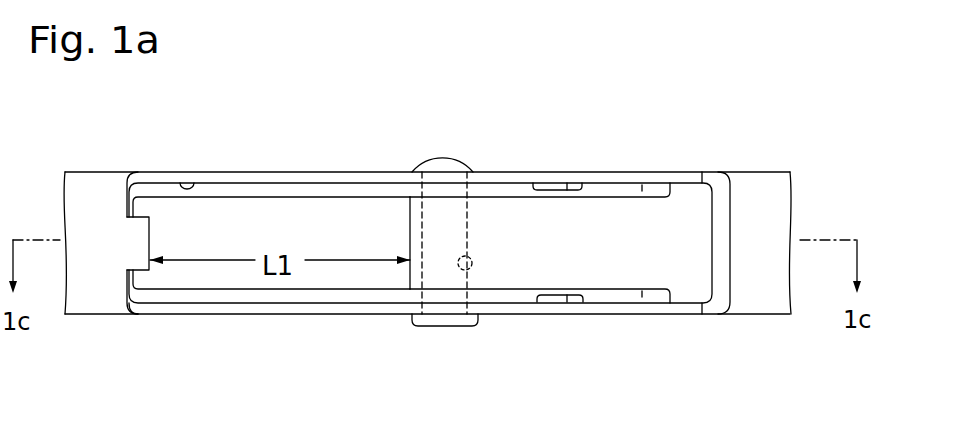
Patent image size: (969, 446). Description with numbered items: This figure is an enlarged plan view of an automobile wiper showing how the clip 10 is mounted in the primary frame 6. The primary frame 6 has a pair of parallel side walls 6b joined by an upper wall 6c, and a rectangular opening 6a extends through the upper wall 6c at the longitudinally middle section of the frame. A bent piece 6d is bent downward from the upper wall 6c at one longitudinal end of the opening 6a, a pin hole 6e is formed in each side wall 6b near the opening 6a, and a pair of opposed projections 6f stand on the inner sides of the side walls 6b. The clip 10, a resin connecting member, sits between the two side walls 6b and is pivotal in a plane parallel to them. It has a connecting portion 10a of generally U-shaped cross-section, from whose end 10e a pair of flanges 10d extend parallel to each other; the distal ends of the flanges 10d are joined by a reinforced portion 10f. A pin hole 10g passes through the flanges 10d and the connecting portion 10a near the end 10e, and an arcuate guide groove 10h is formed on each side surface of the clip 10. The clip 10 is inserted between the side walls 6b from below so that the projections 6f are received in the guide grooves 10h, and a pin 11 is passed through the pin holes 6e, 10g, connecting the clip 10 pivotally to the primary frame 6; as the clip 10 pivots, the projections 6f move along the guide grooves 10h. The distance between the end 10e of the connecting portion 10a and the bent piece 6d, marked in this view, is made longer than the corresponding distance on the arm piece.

The primary frame 6 is at (427, 253).
The rectangular opening 6a is at (186, 188).
The side walls 6b is at (340, 172).
The upper wall 6c is at (92, 184).
The bent piece 6d is at (143, 233).
The pin hole 6e is at (463, 322).
The projections 6f is at (567, 183).
The clip 10 is at (412, 236).
The connecting portion 10a is at (492, 200).
The flanges 10d is at (255, 188).
The end of the connecting portion 10e is at (408, 275).
The reinforced portion 10f is at (133, 281).
The pin hole 10g is at (472, 265).
The arcuate guide groove 10h is at (545, 186).
The pin 11 is at (440, 323).